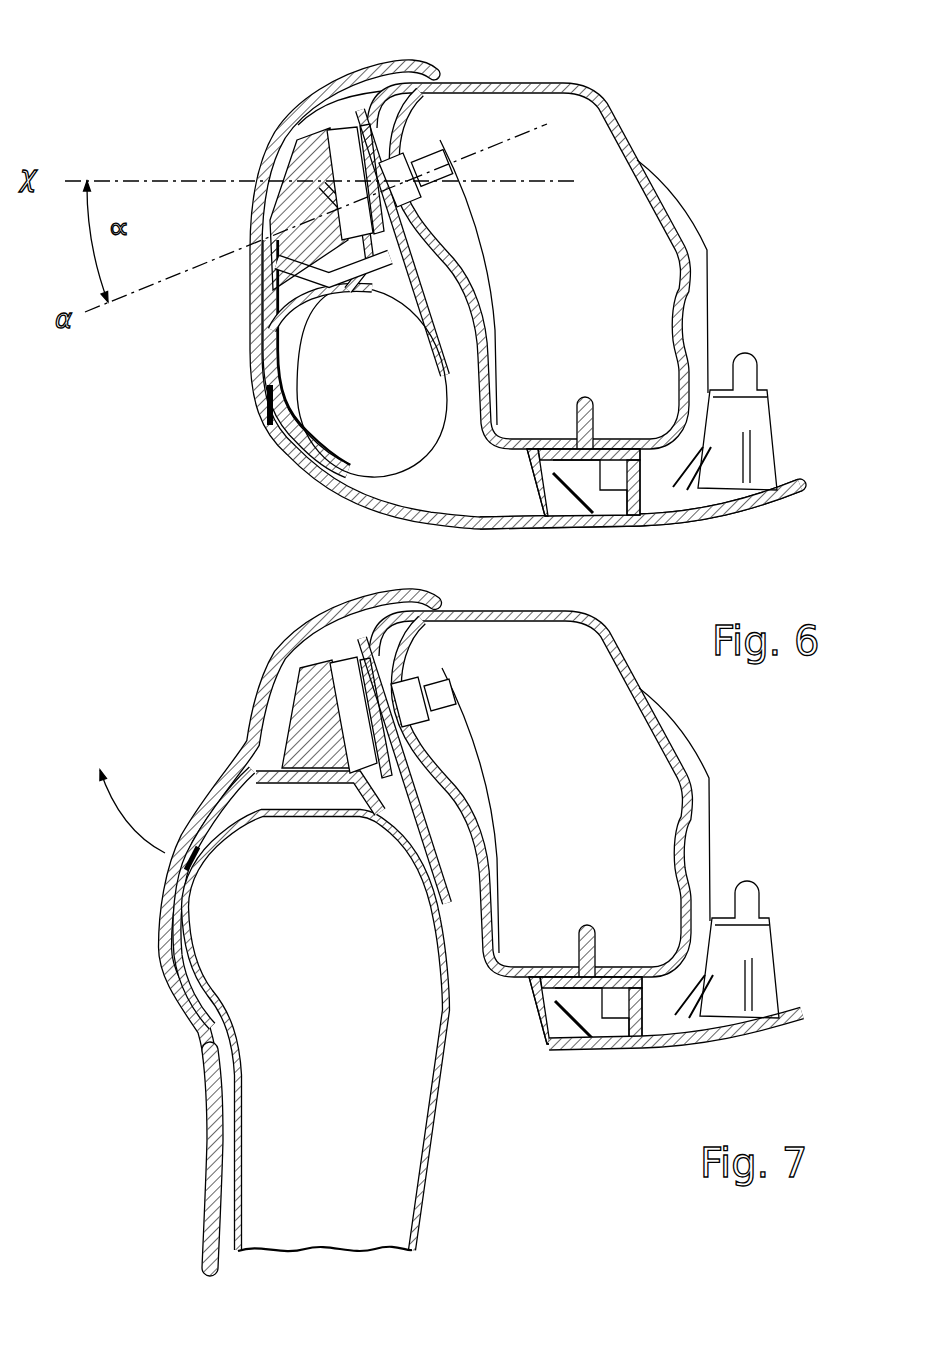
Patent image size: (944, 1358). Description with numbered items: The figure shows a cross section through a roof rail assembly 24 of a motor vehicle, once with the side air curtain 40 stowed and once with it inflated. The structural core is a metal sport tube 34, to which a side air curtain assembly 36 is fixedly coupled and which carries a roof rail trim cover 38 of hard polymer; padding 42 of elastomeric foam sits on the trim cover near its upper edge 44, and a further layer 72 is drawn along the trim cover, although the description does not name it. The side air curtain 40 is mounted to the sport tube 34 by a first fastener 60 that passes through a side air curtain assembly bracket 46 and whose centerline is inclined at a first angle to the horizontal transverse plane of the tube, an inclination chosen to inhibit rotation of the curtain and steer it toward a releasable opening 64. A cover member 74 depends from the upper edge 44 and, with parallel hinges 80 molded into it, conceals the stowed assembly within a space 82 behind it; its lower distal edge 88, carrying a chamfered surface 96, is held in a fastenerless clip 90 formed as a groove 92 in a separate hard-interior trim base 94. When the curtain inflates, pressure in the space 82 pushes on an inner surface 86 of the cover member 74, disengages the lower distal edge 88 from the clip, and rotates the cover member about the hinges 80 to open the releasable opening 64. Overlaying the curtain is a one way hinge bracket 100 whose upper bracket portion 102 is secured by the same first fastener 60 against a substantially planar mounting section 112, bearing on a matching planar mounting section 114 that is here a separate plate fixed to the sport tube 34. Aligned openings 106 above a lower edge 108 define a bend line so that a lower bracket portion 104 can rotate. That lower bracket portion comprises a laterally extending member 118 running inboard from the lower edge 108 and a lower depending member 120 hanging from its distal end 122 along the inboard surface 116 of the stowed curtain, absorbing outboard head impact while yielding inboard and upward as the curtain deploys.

In FIG. 6, the roof rail assembly 24 is at (705, 95).
In FIG. 7, the roof rail assembly 24 is at (785, 770).
In FIG. 6, the sport tube 34 is at (560, 87).
In FIG. 7, the sport tube 34 is at (542, 788).
In FIG. 6, the side air curtain assembly 36 is at (476, 368).
In FIG. 7, the side air curtain assembly 36 is at (485, 796).
In FIG. 6, the roof rail trim cover 38 is at (327, 100).
In FIG. 7, the roof rail trim cover 38 is at (327, 630).
In FIG. 6, the side air curtain 40 is at (360, 457).
In FIG. 7, the side air curtain 40 is at (433, 1140).
In FIG. 6, the padding 42 is at (297, 143).
In FIG. 7, the padding 42 is at (305, 700).
In FIG. 6, the upper edge 44 is at (385, 70).
In FIG. 7, the upper edge 44 is at (373, 598).
In FIG. 6, the side air curtain assembly bracket 46 is at (405, 220).
In FIG. 7, the side air curtain assembly bracket 46 is at (433, 770).
In FIG. 6, the first fastener 60 is at (437, 153).
In FIG. 7, the first fastener 60 is at (440, 710).
In FIG. 6, the releasable opening 64 is at (595, 543).
In FIG. 7, the releasable opening 64 is at (455, 1243).
In FIG. 6, the inner liner 72 is at (278, 368).
In FIG. 7, the inner liner 72 is at (172, 948).
In FIG. 6, the cover member 74 is at (507, 529).
In FIG. 7, the cover member 74 is at (208, 1163).
In FIG. 6, the parallel hinges 80 is at (272, 295).
In FIG. 7, the parallel hinges 80 is at (227, 795).
In FIG. 6, the space 82 is at (497, 453).
In FIG. 6, the inner surface 86 is at (473, 519).
In FIG. 6, the lower distal edge 88 is at (547, 523).
In FIG. 7, the lower distal edge 88 is at (208, 1210).
In FIG. 6, the fastenerless clip 90 is at (580, 543).
In FIG. 7, the groove 92 is at (665, 1057).
In FIG. 6, the hard-interior trim base 94 is at (747, 507).
In FIG. 7, the hard-interior trim base 94 is at (727, 984).
In FIG. 7, the chamfered surface 96 is at (203, 1275).
In FIG. 6, the one way hinge bracket 100 is at (283, 322).
In FIG. 7, the one way hinge bracket 100 is at (207, 805).
In FIG. 6, the upper bracket portion 102 is at (273, 155).
In FIG. 7, the upper bracket portion 102 is at (300, 695).
In FIG. 6, the lower bracket portion 104 is at (313, 463).
In FIG. 7, the lower bracket portion 104 is at (170, 937).
In FIG. 6, the aligned openings 106 is at (390, 230).
In FIG. 7, the aligned openings 106 is at (395, 775).
In FIG. 6, the lower edge 108 is at (375, 262).
In FIG. 7, the lower edge 108 is at (392, 800).
In FIG. 6, the mounting section 112 is at (387, 157).
In FIG. 7, the mounting section 112 is at (386, 680).
In FIG. 6, the mounting section 114 is at (498, 335).
In FIG. 7, the mounting section 114 is at (505, 810).
In FIG. 6, the inboard surface 116 is at (295, 368).
In FIG. 7, the inboard surface 116 is at (200, 977).
In FIG. 6, the laterally extending member 118 is at (318, 290).
In FIG. 7, the laterally extending member 118 is at (283, 790).
In FIG. 6, the lower depending member 120 is at (297, 450).
In FIG. 7, the lower depending member 120 is at (190, 863).
In FIG. 6, the distal end 122 is at (320, 327).
In FIG. 7, the distal end 122 is at (258, 790).